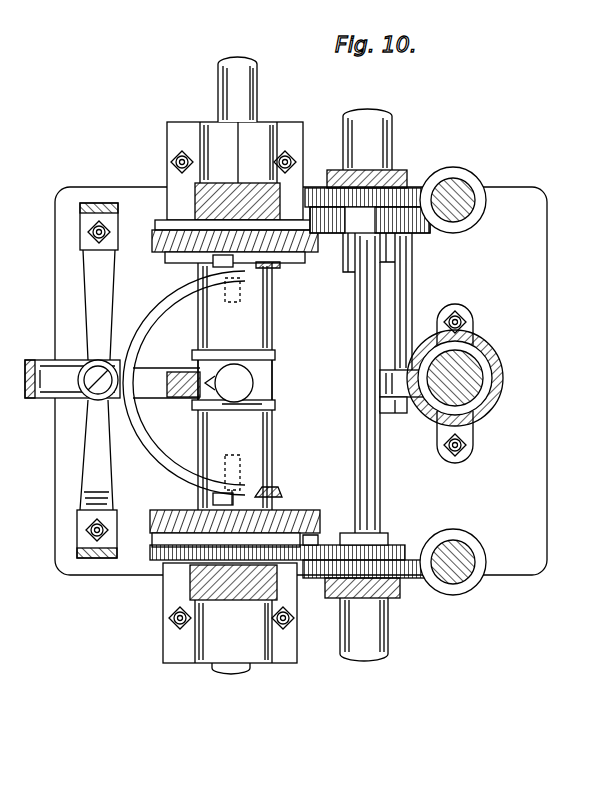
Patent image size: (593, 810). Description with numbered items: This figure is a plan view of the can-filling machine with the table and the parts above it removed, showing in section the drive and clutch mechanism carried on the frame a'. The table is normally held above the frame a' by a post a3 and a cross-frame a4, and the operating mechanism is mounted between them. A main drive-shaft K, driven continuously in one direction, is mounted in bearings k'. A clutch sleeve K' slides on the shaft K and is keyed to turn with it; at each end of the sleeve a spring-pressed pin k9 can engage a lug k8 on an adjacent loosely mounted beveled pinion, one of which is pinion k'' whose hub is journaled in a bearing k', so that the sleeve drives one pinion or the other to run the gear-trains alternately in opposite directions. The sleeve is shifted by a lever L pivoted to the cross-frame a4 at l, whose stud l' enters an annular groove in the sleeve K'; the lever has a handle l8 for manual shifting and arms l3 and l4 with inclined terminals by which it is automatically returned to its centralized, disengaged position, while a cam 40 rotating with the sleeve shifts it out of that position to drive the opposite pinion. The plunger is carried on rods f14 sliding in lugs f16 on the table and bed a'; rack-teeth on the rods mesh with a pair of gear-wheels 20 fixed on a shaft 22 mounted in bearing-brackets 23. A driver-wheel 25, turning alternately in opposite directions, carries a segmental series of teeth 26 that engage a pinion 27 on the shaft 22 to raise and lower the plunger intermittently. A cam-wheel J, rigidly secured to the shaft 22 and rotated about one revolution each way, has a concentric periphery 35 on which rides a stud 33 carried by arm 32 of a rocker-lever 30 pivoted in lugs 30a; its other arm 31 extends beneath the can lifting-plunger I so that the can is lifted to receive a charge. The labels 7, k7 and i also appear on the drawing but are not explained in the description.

The main drive-shaft K is at (258, 89).
The bearing k' is at (207, 398).
The beveled pinion k'' is at (265, 386).
The clutch sleeve K' is at (261, 383).
The lower bevel gear k7 is at (165, 516).
The lug k8 is at (213, 262).
The spring-pressed pin k9 is at (263, 258).
The pivot l is at (88, 403).
The stud l' is at (262, 404).
The lever arm l3 is at (170, 252).
The lever arm l4 is at (268, 456).
The handle l8 is at (43, 392).
The clutch lever L is at (147, 353).
The rod 7 is at (61, 379).
The frame a' is at (301, 381).
The post a3 is at (478, 342).
The cross-frame a4 is at (87, 477).
The can lifting-plunger I is at (483, 373).
The bearing connection i is at (425, 370).
The cam-wheel J is at (452, 231).
The plunger rod f14 is at (466, 186).
The lug f16 is at (462, 168).
The gear-wheel 20 is at (418, 188).
The shaft 22 is at (382, 472).
The bearing-bracket 23 is at (392, 122).
The driver-wheel 25 is at (310, 543).
The segmental gear-teeth 26 is at (152, 556).
The pinion 27 is at (405, 545).
The rocker-lever 30 is at (412, 272).
The lug 30a is at (383, 413).
The lever arm 31 is at (416, 413).
The lever arm 32 is at (347, 272).
The stud 33 is at (347, 248).
The concentric periphery 35 is at (370, 220).
The cam 40 is at (318, 472).